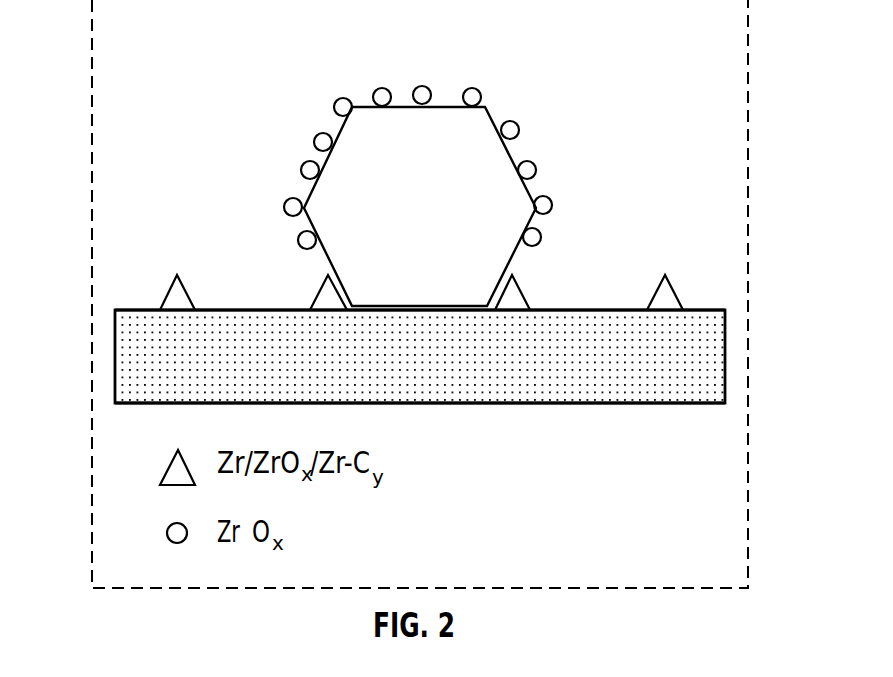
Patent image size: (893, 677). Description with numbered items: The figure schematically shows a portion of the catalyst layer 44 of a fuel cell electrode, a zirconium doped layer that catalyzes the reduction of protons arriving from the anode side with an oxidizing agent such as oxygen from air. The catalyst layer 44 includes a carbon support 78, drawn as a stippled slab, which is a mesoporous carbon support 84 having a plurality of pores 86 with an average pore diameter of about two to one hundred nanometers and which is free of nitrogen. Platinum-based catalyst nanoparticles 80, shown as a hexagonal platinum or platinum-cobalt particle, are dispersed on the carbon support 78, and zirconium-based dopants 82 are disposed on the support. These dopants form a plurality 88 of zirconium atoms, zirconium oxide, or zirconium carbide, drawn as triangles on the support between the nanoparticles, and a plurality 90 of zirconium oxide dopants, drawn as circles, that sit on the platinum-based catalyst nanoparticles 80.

The catalyst layer 44 is at (700, 58).
The carbon support 78 is at (712, 367).
The platinum-based catalyst nanoparticles 80 is at (318, 212).
The zirconium-based dopants 82 is at (318, 142).
The mesoporous carbon support 84 is at (672, 403).
The pores 86 is at (713, 327).
The plurality of zirconium-based dopants 88 is at (185, 288).
The plurality of zirconium-based dopants 90 is at (320, 134).